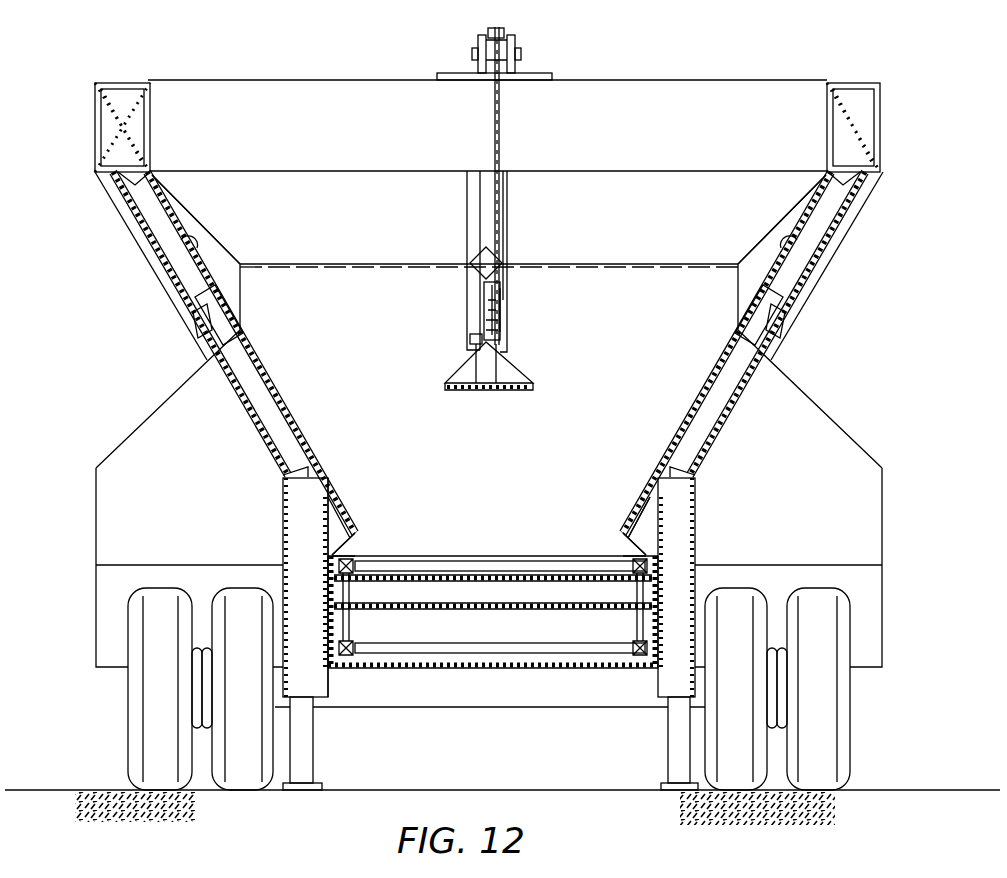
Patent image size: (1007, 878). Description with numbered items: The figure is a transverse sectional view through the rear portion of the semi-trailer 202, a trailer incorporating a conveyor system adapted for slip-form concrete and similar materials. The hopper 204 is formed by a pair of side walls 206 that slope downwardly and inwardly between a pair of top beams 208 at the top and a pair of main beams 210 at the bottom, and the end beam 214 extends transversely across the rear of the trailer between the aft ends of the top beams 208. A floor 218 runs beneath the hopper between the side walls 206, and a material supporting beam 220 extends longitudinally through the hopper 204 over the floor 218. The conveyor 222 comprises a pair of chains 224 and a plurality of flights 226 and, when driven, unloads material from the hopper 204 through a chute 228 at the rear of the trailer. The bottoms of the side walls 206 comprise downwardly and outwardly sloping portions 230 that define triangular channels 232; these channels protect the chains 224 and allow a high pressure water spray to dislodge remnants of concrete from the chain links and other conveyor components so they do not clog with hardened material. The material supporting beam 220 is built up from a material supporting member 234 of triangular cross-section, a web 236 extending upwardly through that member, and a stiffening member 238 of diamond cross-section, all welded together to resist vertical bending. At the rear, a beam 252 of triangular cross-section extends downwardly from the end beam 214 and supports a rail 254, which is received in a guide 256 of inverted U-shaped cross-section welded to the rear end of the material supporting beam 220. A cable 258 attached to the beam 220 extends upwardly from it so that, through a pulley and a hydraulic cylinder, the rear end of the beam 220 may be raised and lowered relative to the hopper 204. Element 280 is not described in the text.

The semi-trailer 202 is at (222, 70).
The hopper 204 is at (283, 293).
The side walls 206 is at (195, 250).
The top beams 208 is at (95, 135).
The main beams 210 is at (282, 498).
The end beam 214 is at (652, 105).
The floor 218 is at (512, 572).
The material supporting beam 220 is at (503, 302).
The conveyor 222 is at (482, 553).
The chains 224 is at (352, 573).
The flights 226 is at (592, 572).
The chute 228 is at (657, 385).
The downwardly and outwardly sloping portions 230 is at (362, 545).
The triangular channels 232 is at (357, 552).
The material supporting member 234 is at (492, 390).
The web 236 is at (484, 295).
The stiffening member 238 is at (474, 247).
The beam 252 is at (467, 205).
The rail 254 is at (485, 183).
The guide 256 is at (470, 340).
The cable 258 is at (501, 135).
The mounting bracket 280 is at (478, 31).